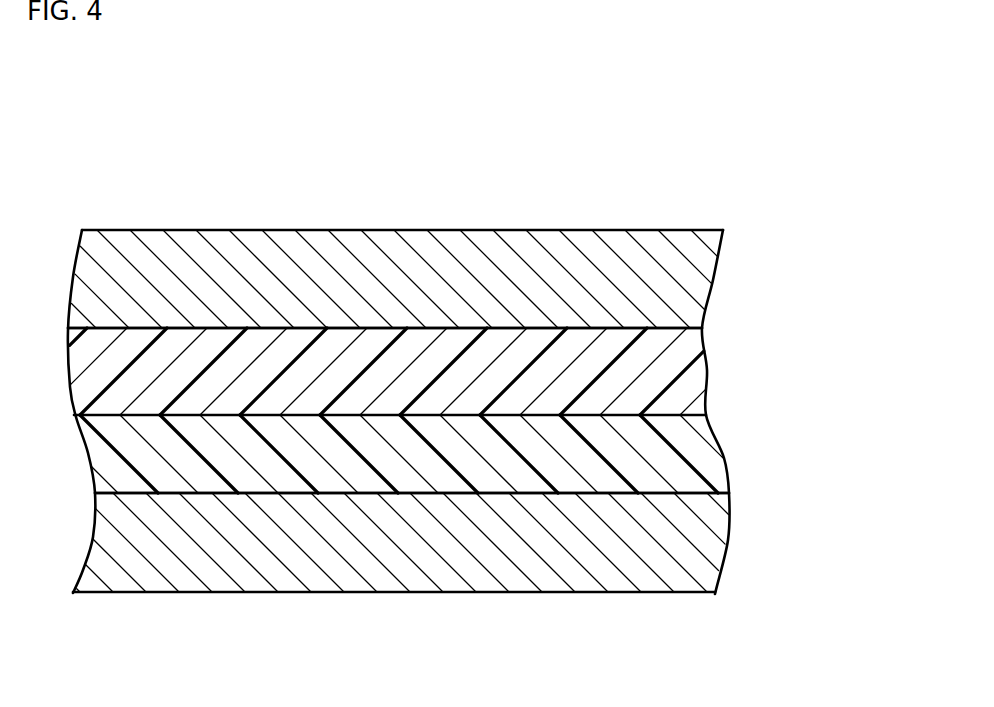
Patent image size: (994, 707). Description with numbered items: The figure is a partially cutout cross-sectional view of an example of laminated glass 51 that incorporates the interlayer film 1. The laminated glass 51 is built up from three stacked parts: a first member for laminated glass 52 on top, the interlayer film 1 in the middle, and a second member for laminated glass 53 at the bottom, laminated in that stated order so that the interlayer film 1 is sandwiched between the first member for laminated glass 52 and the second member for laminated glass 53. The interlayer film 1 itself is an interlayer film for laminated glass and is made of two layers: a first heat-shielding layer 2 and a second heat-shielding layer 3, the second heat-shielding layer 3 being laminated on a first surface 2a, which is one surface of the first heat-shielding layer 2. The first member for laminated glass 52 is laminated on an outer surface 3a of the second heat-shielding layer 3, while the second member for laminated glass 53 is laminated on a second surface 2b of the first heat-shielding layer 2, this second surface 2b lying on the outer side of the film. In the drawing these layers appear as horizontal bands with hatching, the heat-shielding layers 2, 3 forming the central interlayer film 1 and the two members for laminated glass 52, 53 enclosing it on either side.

The laminated glass 51 is at (160, 172).
The first member for laminated glass 52 is at (712, 282).
The second member for laminated glass 53 is at (725, 545).
The interlayer film 1 is at (384, 312).
The first heat-shielding layer 2 is at (740, 457).
The first surface 2a is at (522, 412).
The second surface 2b is at (555, 493).
The second heat-shielding layer 3 is at (718, 370).
The outer surface 3a is at (673, 325).